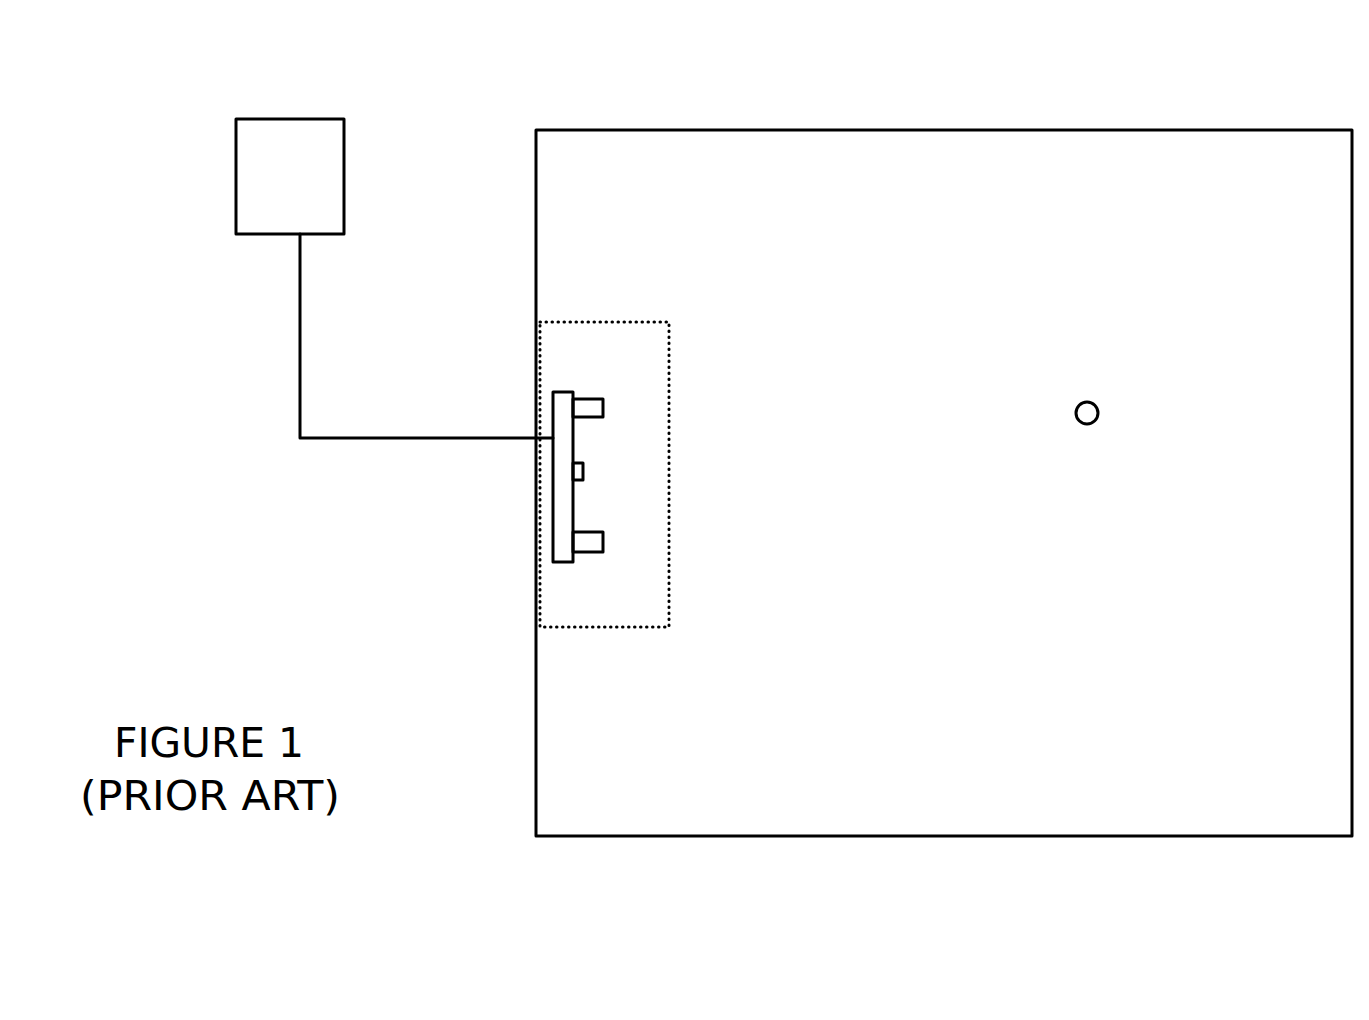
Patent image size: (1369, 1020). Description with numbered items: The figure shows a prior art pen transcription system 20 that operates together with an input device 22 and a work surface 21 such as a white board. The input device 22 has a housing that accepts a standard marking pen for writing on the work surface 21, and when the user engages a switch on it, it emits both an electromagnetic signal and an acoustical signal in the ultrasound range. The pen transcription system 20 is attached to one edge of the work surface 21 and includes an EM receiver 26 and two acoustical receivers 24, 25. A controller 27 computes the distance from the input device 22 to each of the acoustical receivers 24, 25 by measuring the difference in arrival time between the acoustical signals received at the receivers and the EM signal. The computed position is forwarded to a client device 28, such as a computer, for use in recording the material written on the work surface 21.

The pen transcription system 20 is at (620, 327).
The work surface 21 is at (955, 147).
The input device 22 is at (1087, 402).
The acoustical receiver 24 is at (587, 408).
The acoustical receiver 25 is at (592, 543).
The EM receiver 26 is at (583, 473).
The controller 27 is at (554, 562).
The client device 28 is at (247, 140).